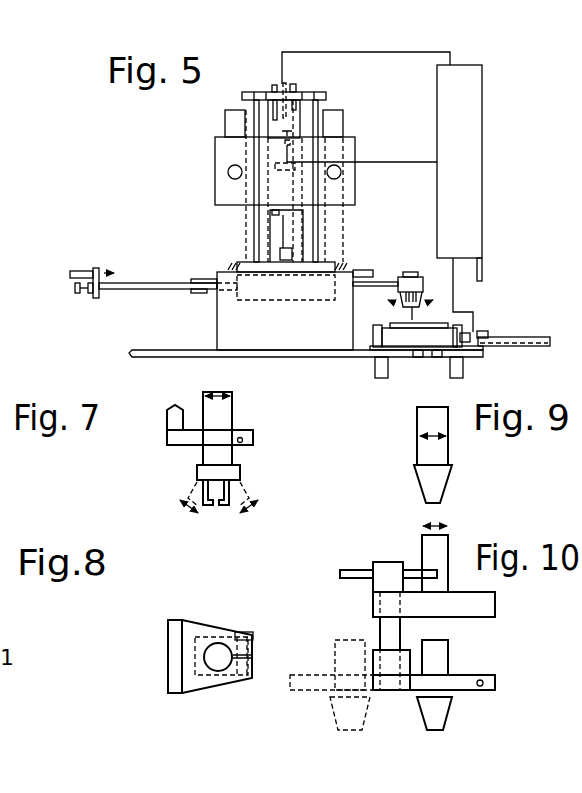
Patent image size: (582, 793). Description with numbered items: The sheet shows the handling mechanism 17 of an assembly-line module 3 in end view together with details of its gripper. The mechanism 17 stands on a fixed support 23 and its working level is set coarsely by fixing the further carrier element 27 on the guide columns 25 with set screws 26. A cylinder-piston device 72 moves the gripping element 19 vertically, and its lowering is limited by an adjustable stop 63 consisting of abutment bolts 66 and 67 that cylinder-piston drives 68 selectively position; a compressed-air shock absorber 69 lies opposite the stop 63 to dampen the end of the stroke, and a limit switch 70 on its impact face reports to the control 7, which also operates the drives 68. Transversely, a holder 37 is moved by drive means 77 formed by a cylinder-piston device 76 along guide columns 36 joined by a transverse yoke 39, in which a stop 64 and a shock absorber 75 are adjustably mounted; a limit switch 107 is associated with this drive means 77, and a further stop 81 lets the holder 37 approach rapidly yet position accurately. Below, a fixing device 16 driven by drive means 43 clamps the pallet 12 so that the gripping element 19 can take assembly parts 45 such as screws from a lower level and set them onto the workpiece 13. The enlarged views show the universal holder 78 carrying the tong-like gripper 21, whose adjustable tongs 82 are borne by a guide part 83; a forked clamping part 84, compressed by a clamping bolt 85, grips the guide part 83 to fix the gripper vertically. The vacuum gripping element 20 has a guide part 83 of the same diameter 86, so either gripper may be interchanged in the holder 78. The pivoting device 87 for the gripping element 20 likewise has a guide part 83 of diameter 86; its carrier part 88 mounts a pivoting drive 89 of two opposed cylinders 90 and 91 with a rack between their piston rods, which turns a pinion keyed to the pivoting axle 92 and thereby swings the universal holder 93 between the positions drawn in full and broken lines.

In FIG. 5, the module 3 is at (574, 333).
In FIG. 5, the control 7 is at (483, 111).
In FIG. 5, the pallet 12 is at (442, 340).
In FIG. 5, the workpiece 13 is at (408, 327).
In FIG. 5, the fixing device 16 is at (487, 347).
In FIG. 5, the handling mechanism 17 is at (342, 82).
In FIG. 5, the gripping element 19 is at (404, 267).
In FIG. 7, the gripping element 19 is at (249, 469).
In FIG. 9, the gripping element 20 is at (458, 480).
In FIG. 10, the gripping element 20 is at (458, 700).
In FIG. 5, the tong-like gripper 21 is at (428, 300).
In FIG. 7, the tong-like gripper 21 is at (197, 472).
In FIG. 5, the fixed support 23 is at (230, 333).
In FIG. 5, the guide columns 25 is at (236, 238).
In FIG. 5, the set screws 26 is at (227, 173).
In FIG. 5, the further carrier element 27 is at (230, 153).
In FIG. 5, the guide columns 36 is at (135, 289).
In FIG. 5, the holder 37 is at (266, 293).
In FIG. 5, the transverse yoke 39 is at (95, 298).
In FIG. 5, the drive means 43 is at (418, 365).
In FIG. 5, the assembly parts 45 is at (414, 312).
In FIG. 5, the adjustable stop 63 is at (258, 110).
In FIG. 5, the stop 64 is at (74, 270).
In FIG. 5, the abutment bolt 66 is at (282, 84).
In FIG. 5, the abutment bolt 67 is at (319, 104).
In FIG. 5, the cylinder-piston drives 68 is at (247, 92).
In FIG. 5, the shock absorber 69 is at (289, 130).
In FIG. 5, the limit switch 70 is at (290, 143).
In FIG. 5, the cylinder-piston device 72 is at (292, 225).
In FIG. 5, the shock absorber 75 is at (70, 274).
In FIG. 5, the cylinder-piston device 76 is at (203, 292).
In FIG. 5, the drive means 77 is at (191, 277).
In FIG. 7, the universal holder 78 is at (175, 431).
In FIG. 5, the stop 81 is at (270, 233).
In FIG. 7, the adjustable tongs 82 is at (203, 501).
In FIG. 7, the guide part 83 is at (227, 418).
In FIG. 9, the guide part 83 is at (443, 455).
In FIG. 8, the guide part 83 is at (222, 663).
In FIG. 10, the guide part 83 is at (442, 550).
In FIG. 7, the clamping part 84 is at (220, 438).
In FIG. 8, the clamping part 84 is at (193, 632).
In FIG. 7, the clamping bolt 85 is at (248, 440).
In FIG. 8, the clamping bolt 85 is at (247, 636).
In FIG. 7, the diameter 86 is at (219, 382).
In FIG. 9, the diameter 86 is at (435, 425).
In FIG. 10, the diameter 86 is at (432, 515).
In FIG. 10, the pivoting device 87 is at (414, 627).
In FIG. 10, the carrier part 88 is at (485, 610).
In FIG. 10, the pivoting drive 89 is at (385, 568).
In FIG. 10, the cylinder 90 is at (360, 578).
In FIG. 10, the cylinder 91 is at (437, 575).
In FIG. 10, the pivoting axle 92 is at (383, 633).
In FIG. 10, the universal holder 93 is at (413, 685).
In FIG. 5, the limit switch 107 is at (217, 297).